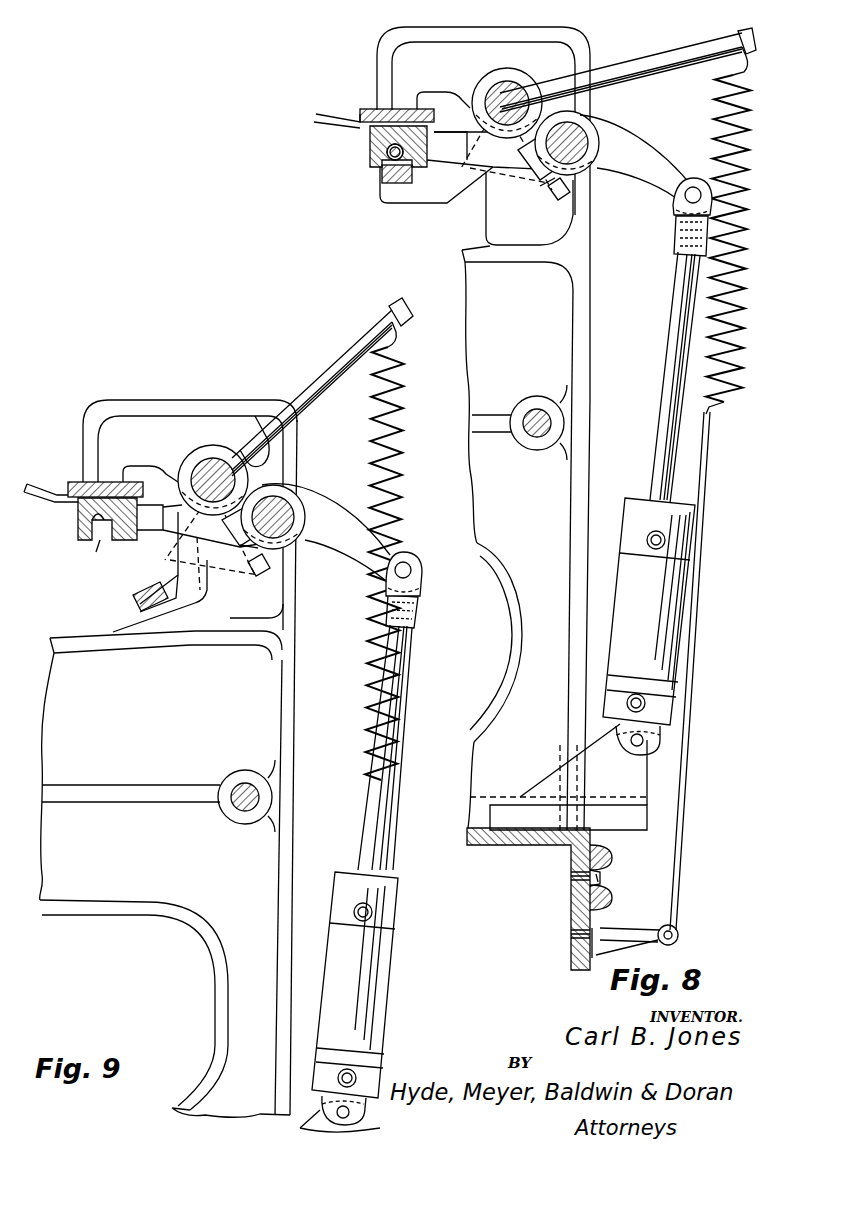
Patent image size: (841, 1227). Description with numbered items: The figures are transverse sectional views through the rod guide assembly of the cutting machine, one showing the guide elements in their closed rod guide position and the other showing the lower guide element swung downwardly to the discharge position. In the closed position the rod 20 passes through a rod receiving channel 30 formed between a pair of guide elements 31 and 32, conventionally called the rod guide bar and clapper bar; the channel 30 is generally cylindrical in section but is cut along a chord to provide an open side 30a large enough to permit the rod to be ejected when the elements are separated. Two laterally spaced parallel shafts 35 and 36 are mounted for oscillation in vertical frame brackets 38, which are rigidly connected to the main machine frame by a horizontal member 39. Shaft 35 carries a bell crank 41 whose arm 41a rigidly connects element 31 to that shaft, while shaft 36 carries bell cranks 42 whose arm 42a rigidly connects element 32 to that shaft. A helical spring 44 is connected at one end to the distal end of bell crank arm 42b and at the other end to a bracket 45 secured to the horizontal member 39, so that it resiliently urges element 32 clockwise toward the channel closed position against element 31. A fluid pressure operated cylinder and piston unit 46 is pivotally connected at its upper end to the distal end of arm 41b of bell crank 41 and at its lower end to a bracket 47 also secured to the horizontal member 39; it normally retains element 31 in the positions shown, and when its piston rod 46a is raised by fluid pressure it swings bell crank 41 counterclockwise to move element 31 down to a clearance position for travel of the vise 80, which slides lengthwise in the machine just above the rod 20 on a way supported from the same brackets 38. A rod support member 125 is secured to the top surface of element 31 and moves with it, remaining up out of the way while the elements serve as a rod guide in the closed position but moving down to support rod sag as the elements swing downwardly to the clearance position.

In FIG. 8, the rod 20 is at (386, 160).
In FIG. 8, the rod receiving channel 30 is at (365, 130).
In FIG. 9, the rod receiving channel 30 is at (92, 524).
In FIG. 9, the open side 30a is at (98, 545).
In FIG. 8, the guide element (rod guide bar) 31 is at (372, 150).
In FIG. 9, the guide element (rod guide bar) 31 is at (78, 512).
In FIG. 8, the guide element (clapper bar) 32 is at (380, 182).
In FIG. 9, the guide element (clapper bar) 32 is at (133, 597).
In FIG. 8, the shaft 35 is at (588, 146).
In FIG. 9, the shaft 35 is at (292, 516).
In FIG. 8, the shaft 36 is at (515, 90).
In FIG. 9, the shaft 36 is at (205, 452).
In FIG. 8, the vertical frame bracket 38 is at (584, 333).
In FIG. 9, the vertical frame bracket 38 is at (292, 706).
In FIG. 8, the horizontal member 39 is at (520, 840).
In FIG. 8, the bell crank 41 is at (618, 124).
In FIG. 9, the bell crank 41 is at (310, 494).
In FIG. 8, the arm 41a is at (473, 160).
In FIG. 9, the arm 41a is at (170, 537).
In FIG. 8, the arm 41b is at (648, 168).
In FIG. 9, the arm 41b is at (340, 556).
In FIG. 8, the bell crank 42 is at (636, 62).
In FIG. 9, the bell crank 42 is at (330, 364).
In FIG. 8, the arm 42a is at (424, 196).
In FIG. 9, the arm 42a is at (218, 568).
In FIG. 8, the arm 42b is at (682, 68).
In FIG. 9, the arm 42b is at (346, 388).
In FIG. 8, the helical spring 44 is at (742, 184).
In FIG. 9, the helical spring 44 is at (398, 460).
In FIG. 8, the bracket 45 is at (630, 932).
In FIG. 8, the fluid pressure operated cylinder and piston unit 46 is at (622, 580).
In FIG. 9, the fluid pressure operated cylinder and piston unit 46 is at (338, 935).
In FIG. 8, the piston rod 46a is at (668, 352).
In FIG. 9, the piston rod 46a is at (394, 812).
In FIG. 8, the bracket 47 is at (601, 787).
In FIG. 8, the vise 80 is at (343, 88).
In FIG. 9, the vise 80 is at (118, 392).
In FIG. 8, the rod support member 125 is at (328, 114).
In FIG. 9, the rod support member 125 is at (40, 486).